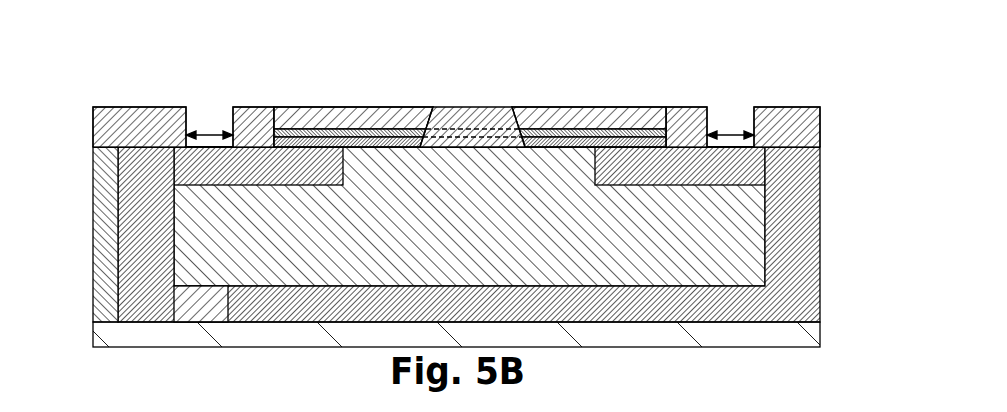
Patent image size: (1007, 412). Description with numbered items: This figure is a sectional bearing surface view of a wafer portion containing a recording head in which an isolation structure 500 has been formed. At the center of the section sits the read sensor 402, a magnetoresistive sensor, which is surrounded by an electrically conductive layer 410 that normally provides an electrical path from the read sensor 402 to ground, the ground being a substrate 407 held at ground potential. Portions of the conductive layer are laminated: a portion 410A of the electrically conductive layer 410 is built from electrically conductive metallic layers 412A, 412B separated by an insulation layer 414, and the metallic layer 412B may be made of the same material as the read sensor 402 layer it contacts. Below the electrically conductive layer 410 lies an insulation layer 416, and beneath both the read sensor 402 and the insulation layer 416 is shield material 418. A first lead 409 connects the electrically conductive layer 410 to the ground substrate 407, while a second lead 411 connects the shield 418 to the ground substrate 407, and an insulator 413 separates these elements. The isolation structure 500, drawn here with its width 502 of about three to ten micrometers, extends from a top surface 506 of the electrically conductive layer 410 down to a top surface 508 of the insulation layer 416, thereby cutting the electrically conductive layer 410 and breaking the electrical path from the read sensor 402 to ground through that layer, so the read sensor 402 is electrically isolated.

The read sensor 402 is at (455, 128).
The substrate 407 is at (470, 345).
The first lead 409 is at (107, 220).
The electrically conductive layer 410 is at (84, 120).
The portion of electrically conductive layer 410A is at (275, 57).
The second lead 411 is at (188, 298).
The electrically conductive metallic layer 412A is at (288, 122).
The electrically conductive metallic layer 412B is at (337, 143).
The insulator 413 is at (133, 248).
The insulation layer 414 is at (393, 132).
The insulation layer 416 is at (205, 168).
The shield material 418 is at (478, 241).
The isolation structure 500 is at (207, 125).
The width of isolation ring 502 is at (204, 127).
The top surface of electrically conductive layer 506 is at (247, 107).
The top surface of insulator layer 508 is at (187, 146).